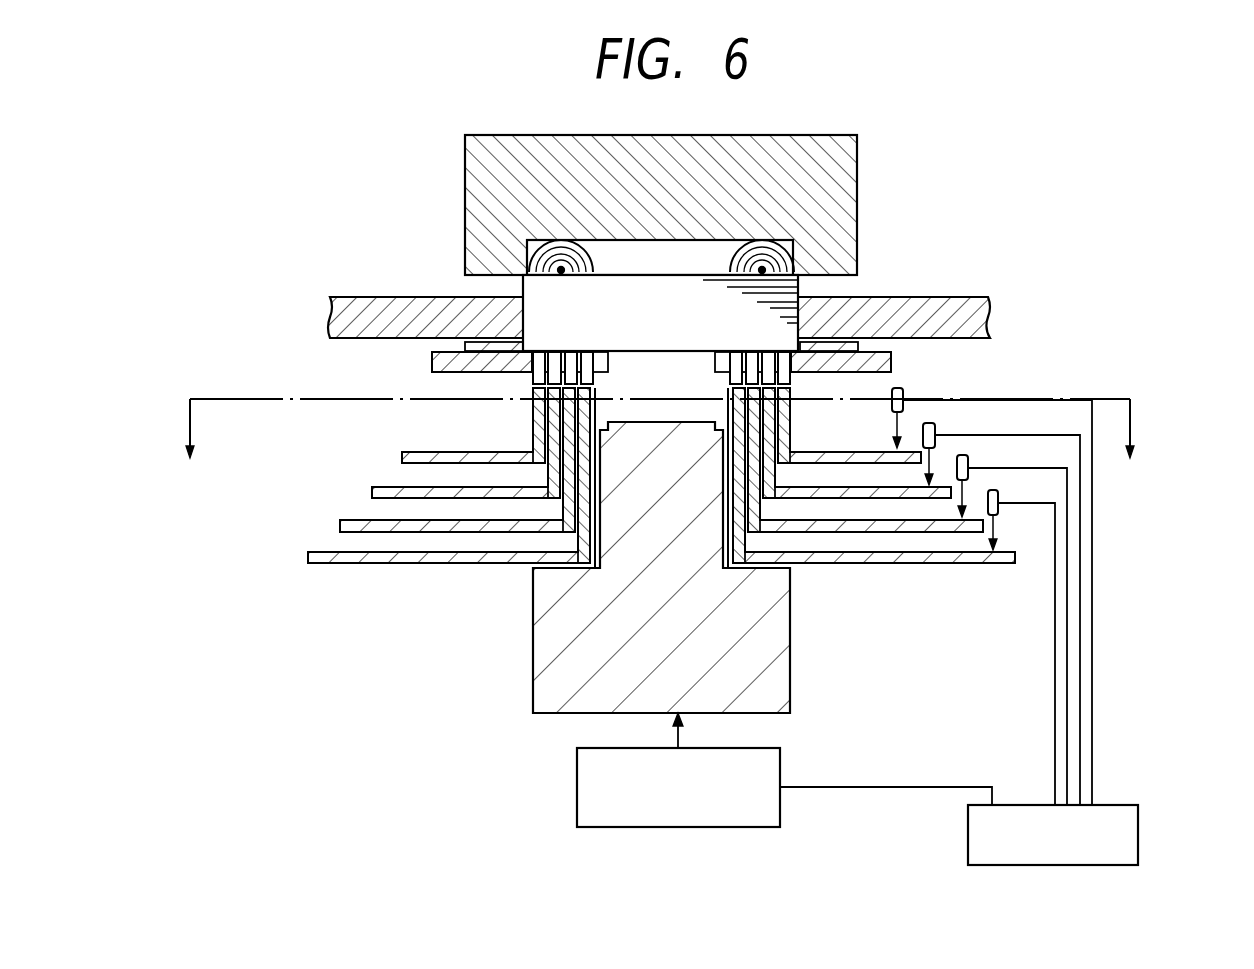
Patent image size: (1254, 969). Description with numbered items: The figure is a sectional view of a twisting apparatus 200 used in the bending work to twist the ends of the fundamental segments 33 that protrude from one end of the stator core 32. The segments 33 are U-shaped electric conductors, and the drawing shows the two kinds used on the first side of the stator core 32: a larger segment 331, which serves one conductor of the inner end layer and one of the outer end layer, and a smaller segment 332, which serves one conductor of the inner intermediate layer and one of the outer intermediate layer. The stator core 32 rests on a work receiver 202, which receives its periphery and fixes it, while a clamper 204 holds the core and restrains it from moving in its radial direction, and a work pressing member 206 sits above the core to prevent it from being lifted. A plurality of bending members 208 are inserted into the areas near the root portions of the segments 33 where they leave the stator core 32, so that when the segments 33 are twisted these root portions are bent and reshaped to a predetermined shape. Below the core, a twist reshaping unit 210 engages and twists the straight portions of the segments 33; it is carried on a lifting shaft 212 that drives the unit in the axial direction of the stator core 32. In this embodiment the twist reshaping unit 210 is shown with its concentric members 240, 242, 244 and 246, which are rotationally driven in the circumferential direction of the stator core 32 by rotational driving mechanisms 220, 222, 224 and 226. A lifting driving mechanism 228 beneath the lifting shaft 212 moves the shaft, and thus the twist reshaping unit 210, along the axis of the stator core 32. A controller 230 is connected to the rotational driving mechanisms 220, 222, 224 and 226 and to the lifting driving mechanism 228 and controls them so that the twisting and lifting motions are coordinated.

The twisting apparatus 200 is at (1055, 173).
The work receiver 202 is at (853, 347).
The clamper 204 is at (958, 302).
The work pressing member 206 is at (833, 181).
The bending members 208 is at (880, 363).
The twist reshaping unit 210 is at (660, 502).
The lifting shaft 212 is at (777, 667).
The rotational driving mechanism 220 is at (903, 408).
The rotational driving mechanism 222 is at (935, 445).
The rotational driving mechanism 224 is at (968, 477).
The rotational driving mechanism 226 is at (998, 515).
The lifting driving mechanism 228 is at (780, 762).
The controller 230 is at (1138, 815).
The first lift plate 240 is at (540, 419).
The second lift plate 242 is at (553, 481).
The third lift plate 244 is at (570, 515).
The fourth lift plate 246 is at (583, 548).
The stator core 32 is at (820, 281).
The fundamental segments 33 is at (547, 225).
The larger segment 331 is at (543, 243).
The smaller segment 332 is at (540, 263).